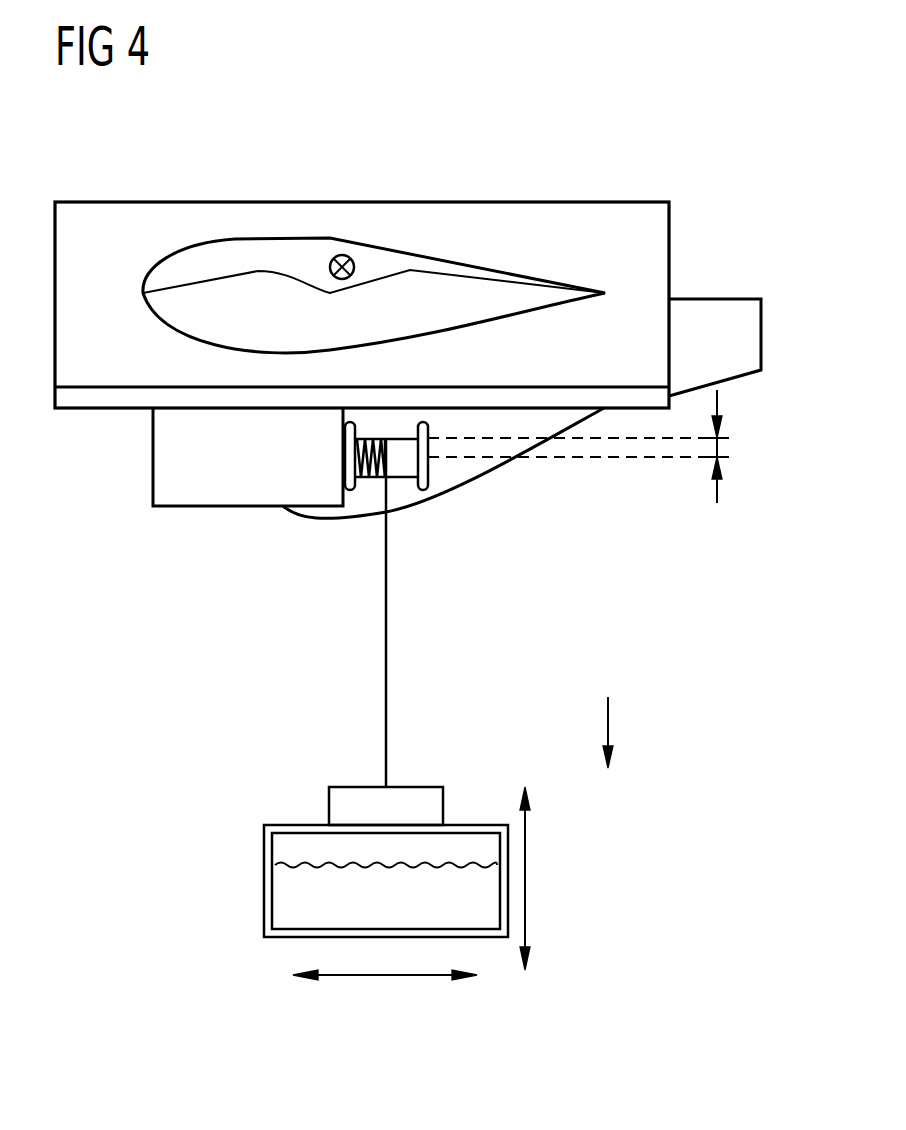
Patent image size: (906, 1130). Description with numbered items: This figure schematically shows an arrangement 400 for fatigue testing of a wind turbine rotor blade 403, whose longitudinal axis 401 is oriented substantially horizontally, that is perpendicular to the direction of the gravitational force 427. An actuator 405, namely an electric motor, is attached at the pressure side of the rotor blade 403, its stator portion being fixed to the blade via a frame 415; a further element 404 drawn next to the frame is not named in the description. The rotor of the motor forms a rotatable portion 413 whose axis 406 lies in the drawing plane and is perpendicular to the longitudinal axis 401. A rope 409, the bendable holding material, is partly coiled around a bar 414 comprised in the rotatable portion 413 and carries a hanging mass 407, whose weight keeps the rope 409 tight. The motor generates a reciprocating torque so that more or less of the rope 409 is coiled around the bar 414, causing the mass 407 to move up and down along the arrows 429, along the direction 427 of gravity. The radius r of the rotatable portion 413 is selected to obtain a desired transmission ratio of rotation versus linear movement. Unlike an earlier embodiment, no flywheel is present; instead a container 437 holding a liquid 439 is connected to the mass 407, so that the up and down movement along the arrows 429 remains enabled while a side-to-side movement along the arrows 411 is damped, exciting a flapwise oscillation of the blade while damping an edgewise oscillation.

The arrangement for fatigue testing 400 is at (530, 613).
The longitudinal axis 401 is at (342, 255).
The rotor blade 403 is at (262, 155).
The housing 404 is at (162, 457).
The actuator 405 is at (235, 548).
The axis of the rotatable part 406 is at (548, 460).
The mass 407 is at (329, 812).
The rope 409 is at (387, 670).
The arrows of side-side movement 411 is at (386, 977).
The rotatable portion 413 is at (355, 490).
The bar 414 is at (396, 467).
The frame 415 is at (542, 210).
The direction of the gravitational force 427 is at (608, 722).
The arrows of up and down movement 429 is at (526, 875).
The container 437 is at (264, 878).
The liquid 439 is at (293, 908).
The radius of the rotatable portion r is at (729, 447).